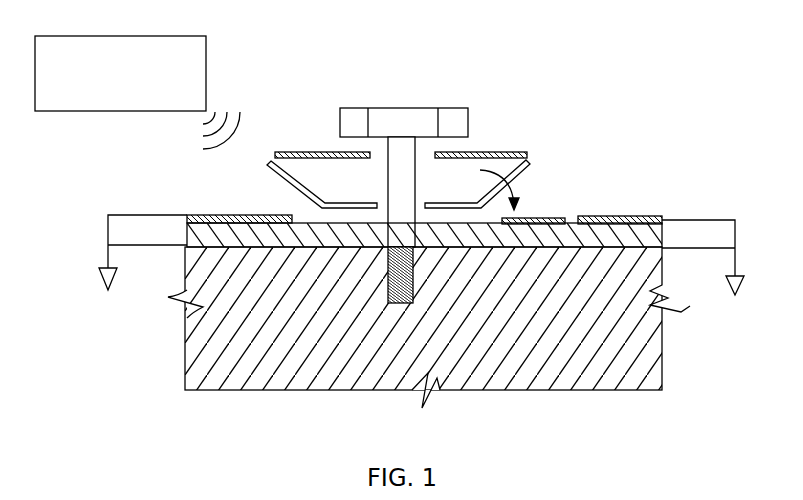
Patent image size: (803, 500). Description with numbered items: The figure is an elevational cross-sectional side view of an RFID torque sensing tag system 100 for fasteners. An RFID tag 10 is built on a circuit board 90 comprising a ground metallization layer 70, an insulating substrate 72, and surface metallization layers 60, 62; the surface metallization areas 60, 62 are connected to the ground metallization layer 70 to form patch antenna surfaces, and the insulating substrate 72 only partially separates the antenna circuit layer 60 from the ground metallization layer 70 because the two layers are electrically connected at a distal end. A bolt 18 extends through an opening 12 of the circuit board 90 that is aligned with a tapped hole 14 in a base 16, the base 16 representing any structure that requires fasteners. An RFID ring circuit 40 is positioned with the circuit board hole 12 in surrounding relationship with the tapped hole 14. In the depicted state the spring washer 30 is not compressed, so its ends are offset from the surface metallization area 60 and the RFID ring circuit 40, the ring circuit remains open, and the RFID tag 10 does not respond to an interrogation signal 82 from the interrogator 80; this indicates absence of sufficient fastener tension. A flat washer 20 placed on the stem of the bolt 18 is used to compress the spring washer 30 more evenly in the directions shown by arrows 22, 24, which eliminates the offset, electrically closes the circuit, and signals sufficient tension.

The RFID tag 10 is at (506, 94).
The RFID torque sensing tag system 100 is at (657, 28).
The opening 12 is at (380, 257).
The tapped hole 14 is at (399, 303).
The base 16 is at (683, 302).
The bolt 18 is at (425, 108).
The flat washer 20 is at (472, 152).
The arrow 22 is at (521, 160).
The arrow 24 is at (296, 208).
The spring washer 30 is at (350, 200).
The RFID ring circuit 40 is at (552, 220).
The surface metallization layer 60 is at (612, 217).
The surface metallization layer 62 is at (223, 215).
The ground metallization layer 70 is at (205, 248).
The insulating substrate 72 is at (572, 219).
The interrogator 80 is at (82, 33).
The interrogation signal 82 is at (214, 150).
The circuit board 90 is at (663, 217).